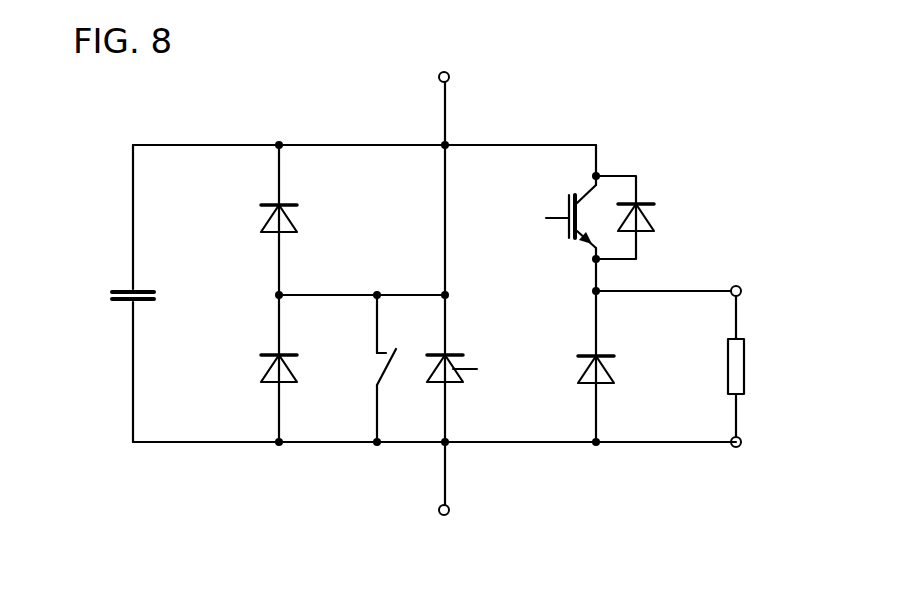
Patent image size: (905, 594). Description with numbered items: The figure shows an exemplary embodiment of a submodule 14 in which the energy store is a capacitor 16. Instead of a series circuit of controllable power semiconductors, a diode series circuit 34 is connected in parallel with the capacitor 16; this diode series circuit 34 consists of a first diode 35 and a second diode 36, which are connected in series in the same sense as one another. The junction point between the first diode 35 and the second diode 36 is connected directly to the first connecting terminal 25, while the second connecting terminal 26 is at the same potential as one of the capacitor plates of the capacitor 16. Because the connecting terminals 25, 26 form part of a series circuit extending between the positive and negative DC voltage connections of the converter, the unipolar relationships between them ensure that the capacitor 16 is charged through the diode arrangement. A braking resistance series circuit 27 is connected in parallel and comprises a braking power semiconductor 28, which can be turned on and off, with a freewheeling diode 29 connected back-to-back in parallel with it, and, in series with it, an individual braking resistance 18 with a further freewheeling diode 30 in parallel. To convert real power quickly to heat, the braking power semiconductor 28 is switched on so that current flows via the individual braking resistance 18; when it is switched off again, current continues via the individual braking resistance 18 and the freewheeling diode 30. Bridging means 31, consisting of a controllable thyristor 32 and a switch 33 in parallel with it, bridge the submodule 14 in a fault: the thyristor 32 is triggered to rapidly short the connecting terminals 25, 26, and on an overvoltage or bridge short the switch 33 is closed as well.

The submodule 14 is at (718, 113).
The capacitor 16 is at (122, 304).
The individual braking resistance 18 is at (747, 367).
The first connecting terminal 25 is at (450, 77).
The second connecting terminal 26 is at (450, 511).
The braking resistance series circuit 27 is at (557, 308).
The braking power semiconductor 28 is at (566, 201).
The freewheeling diode 29 is at (652, 222).
The freewheeling diode 30 is at (605, 385).
The bridging means 31 is at (465, 280).
The thyristor 32 is at (452, 388).
The switch 33 is at (388, 368).
The diode series circuit 34 is at (178, 259).
The first diode 35 is at (279, 205).
The second diode 36 is at (285, 385).